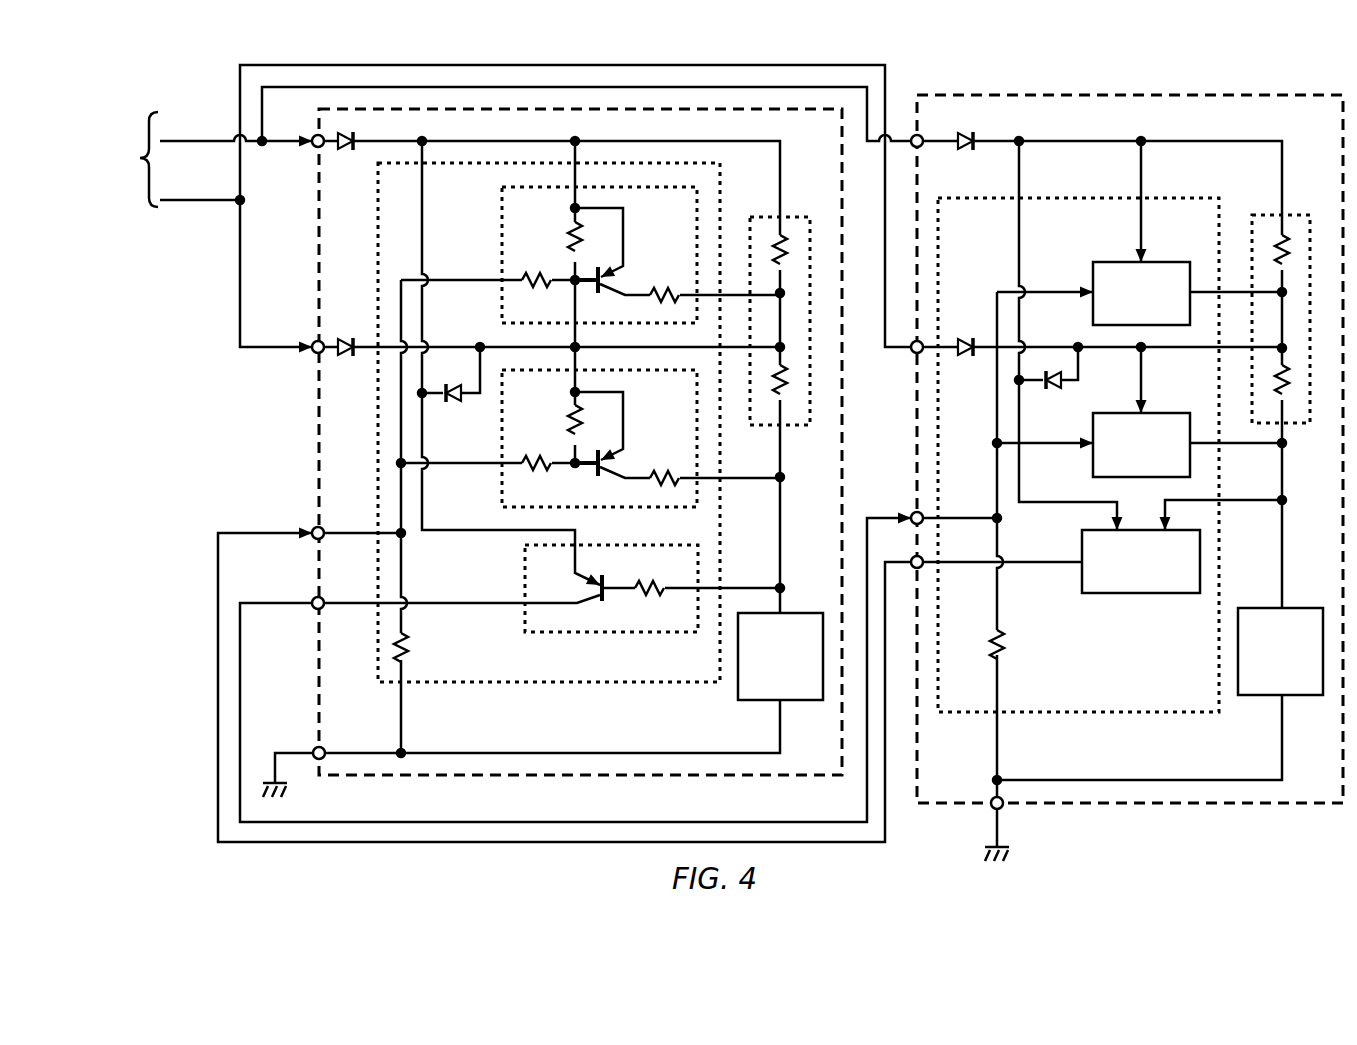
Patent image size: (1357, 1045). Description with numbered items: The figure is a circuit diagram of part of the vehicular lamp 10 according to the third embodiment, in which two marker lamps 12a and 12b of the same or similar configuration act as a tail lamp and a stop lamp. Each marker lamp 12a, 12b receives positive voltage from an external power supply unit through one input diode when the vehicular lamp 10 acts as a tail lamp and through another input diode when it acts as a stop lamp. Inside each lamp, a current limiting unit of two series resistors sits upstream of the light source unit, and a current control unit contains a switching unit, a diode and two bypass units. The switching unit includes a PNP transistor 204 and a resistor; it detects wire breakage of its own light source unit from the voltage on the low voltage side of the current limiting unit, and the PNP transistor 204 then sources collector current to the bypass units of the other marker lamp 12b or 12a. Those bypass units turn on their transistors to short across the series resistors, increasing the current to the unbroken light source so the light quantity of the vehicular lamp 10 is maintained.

The vehicular lamp 10 is at (1256, 66).
The marker lamp 12a is at (319, 682).
The marker lamp 12b is at (1172, 803).
The PNP transistor 204 is at (595, 588).